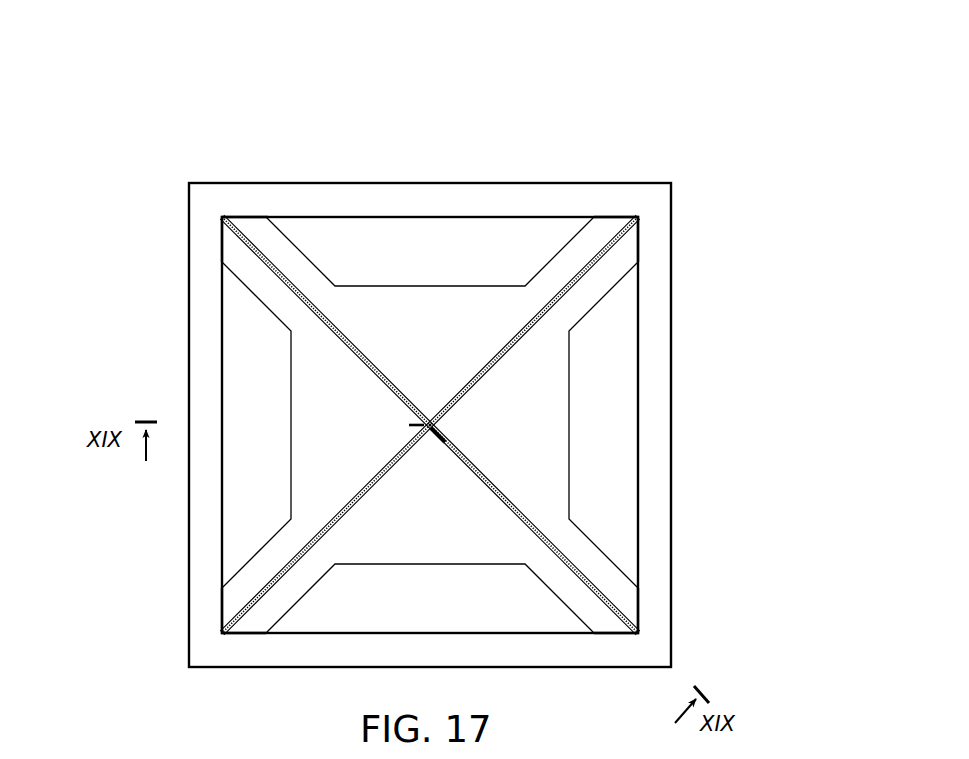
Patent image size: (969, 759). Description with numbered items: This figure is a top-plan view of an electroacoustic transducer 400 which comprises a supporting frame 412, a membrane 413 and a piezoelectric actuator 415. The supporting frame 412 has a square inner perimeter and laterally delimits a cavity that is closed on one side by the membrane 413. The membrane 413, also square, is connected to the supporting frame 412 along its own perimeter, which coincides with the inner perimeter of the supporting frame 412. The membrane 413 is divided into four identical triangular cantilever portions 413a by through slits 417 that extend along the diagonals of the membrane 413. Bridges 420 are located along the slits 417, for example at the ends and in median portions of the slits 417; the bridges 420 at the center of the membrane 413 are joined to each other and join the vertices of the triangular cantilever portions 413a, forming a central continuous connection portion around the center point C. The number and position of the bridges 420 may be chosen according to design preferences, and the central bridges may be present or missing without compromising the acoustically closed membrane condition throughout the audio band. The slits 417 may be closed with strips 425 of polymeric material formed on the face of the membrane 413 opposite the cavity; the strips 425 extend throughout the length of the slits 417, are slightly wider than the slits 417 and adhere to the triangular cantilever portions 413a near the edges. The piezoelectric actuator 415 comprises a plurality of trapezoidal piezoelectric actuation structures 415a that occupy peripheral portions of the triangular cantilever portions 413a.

The electroacoustic transducer 400 is at (730, 181).
The supporting frame 412 is at (457, 192).
The membrane 413 is at (323, 382).
The triangular cantilever portions 413a is at (368, 298).
The piezoelectric actuator 415 is at (609, 331).
The piezoelectric actuation structures 415a is at (527, 230).
The through slits 417 is at (606, 259).
The bridges 420 is at (535, 318).
The strips 425 is at (367, 366).
The center point C is at (430, 428).